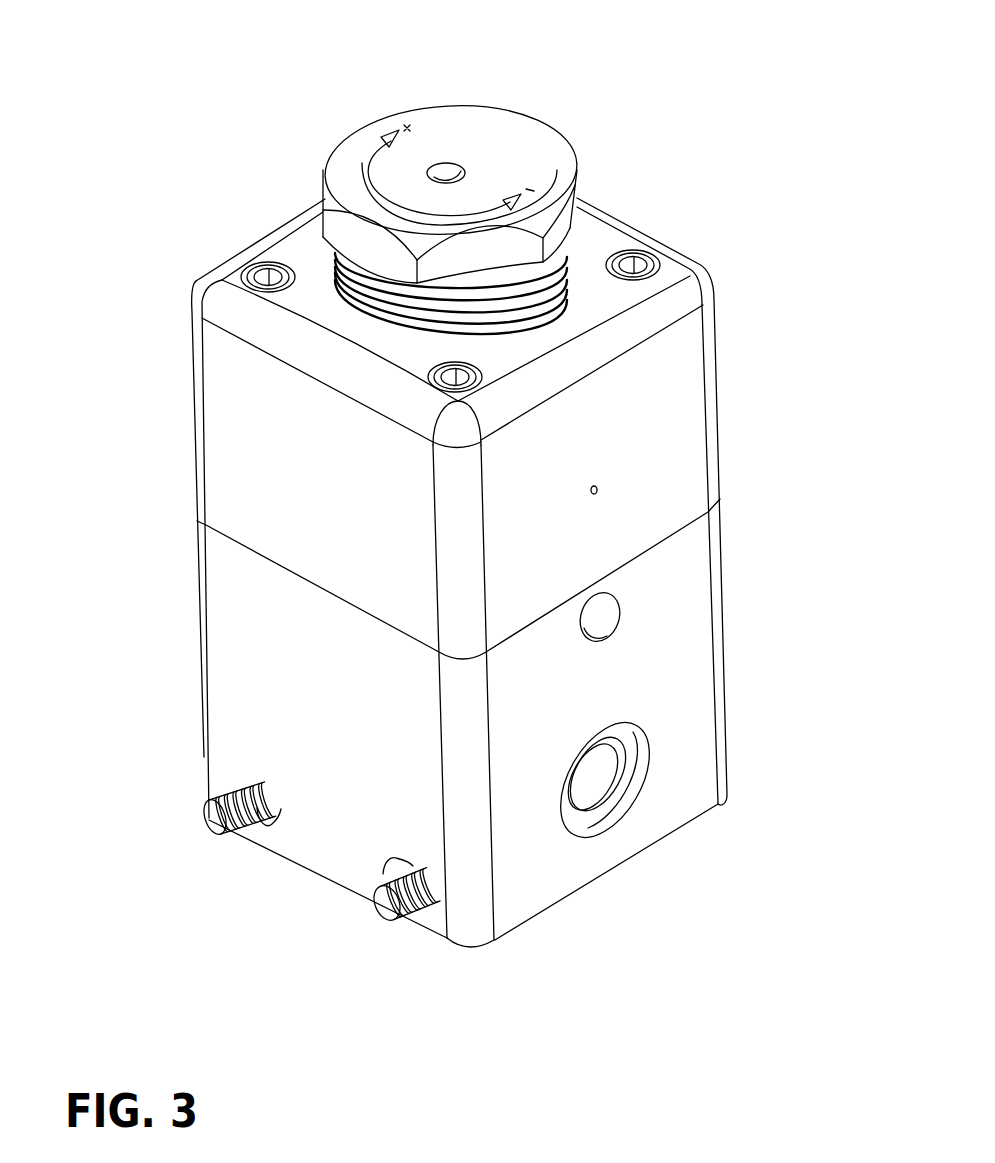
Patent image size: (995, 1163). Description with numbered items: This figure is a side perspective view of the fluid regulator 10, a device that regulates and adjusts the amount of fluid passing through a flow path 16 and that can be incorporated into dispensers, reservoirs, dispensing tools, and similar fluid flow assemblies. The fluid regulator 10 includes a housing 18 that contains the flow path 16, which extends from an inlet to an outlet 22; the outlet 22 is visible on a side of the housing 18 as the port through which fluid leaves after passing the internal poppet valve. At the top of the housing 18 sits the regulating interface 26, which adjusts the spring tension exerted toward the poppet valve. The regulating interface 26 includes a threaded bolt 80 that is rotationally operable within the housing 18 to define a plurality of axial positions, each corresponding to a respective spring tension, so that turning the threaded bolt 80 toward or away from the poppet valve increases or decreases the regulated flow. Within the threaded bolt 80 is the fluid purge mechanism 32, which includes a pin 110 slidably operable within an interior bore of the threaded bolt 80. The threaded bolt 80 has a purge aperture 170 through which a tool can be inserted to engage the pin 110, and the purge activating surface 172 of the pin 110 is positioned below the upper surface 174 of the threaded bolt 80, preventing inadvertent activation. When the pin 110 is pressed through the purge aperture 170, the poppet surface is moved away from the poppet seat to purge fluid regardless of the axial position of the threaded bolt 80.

The fluid regulator 10 is at (451, 495).
The flow path 16 is at (688, 844).
The housing 18 is at (199, 548).
The outlet 22 is at (638, 806).
The regulating interface 26 is at (441, 171).
The fluid purge mechanism 32 is at (432, 159).
The threaded bolt 80 is at (353, 143).
The pin 110 is at (520, 150).
The purge aperture 170 is at (467, 171).
The purge activating surface 172 is at (430, 177).
The upper surface 174 is at (380, 128).